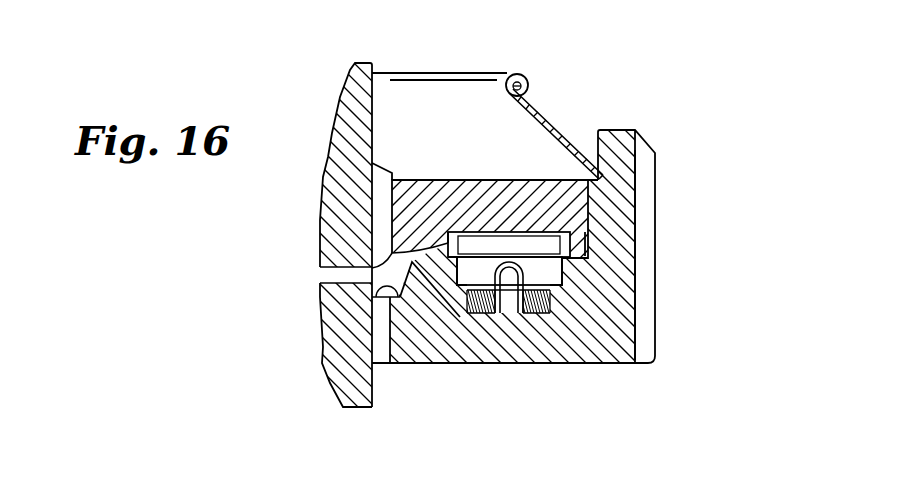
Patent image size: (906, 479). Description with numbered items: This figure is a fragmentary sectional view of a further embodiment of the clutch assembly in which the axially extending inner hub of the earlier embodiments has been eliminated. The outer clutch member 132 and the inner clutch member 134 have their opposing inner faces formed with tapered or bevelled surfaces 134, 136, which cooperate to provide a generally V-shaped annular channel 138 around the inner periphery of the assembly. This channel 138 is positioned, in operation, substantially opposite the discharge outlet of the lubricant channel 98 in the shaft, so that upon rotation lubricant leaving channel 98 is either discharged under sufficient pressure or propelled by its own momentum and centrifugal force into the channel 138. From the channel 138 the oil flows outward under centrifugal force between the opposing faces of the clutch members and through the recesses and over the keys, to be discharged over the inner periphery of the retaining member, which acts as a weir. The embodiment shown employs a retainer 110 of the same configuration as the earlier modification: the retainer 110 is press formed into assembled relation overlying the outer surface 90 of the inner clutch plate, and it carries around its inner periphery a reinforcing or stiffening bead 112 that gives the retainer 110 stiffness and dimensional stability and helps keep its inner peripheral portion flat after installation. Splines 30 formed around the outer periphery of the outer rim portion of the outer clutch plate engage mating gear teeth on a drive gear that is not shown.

The splines 30 is at (645, 217).
The outer surface 90 is at (457, 180).
The lubricant channel 98 is at (343, 280).
The retainer 110 is at (545, 120).
The reinforcing bead 112 is at (518, 75).
The outer clutch member 132 is at (592, 333).
The inner clutch member 134 is at (510, 213).
The bevelled surface 136 is at (365, 266).
The V-shaped annular channel 138 is at (462, 320).